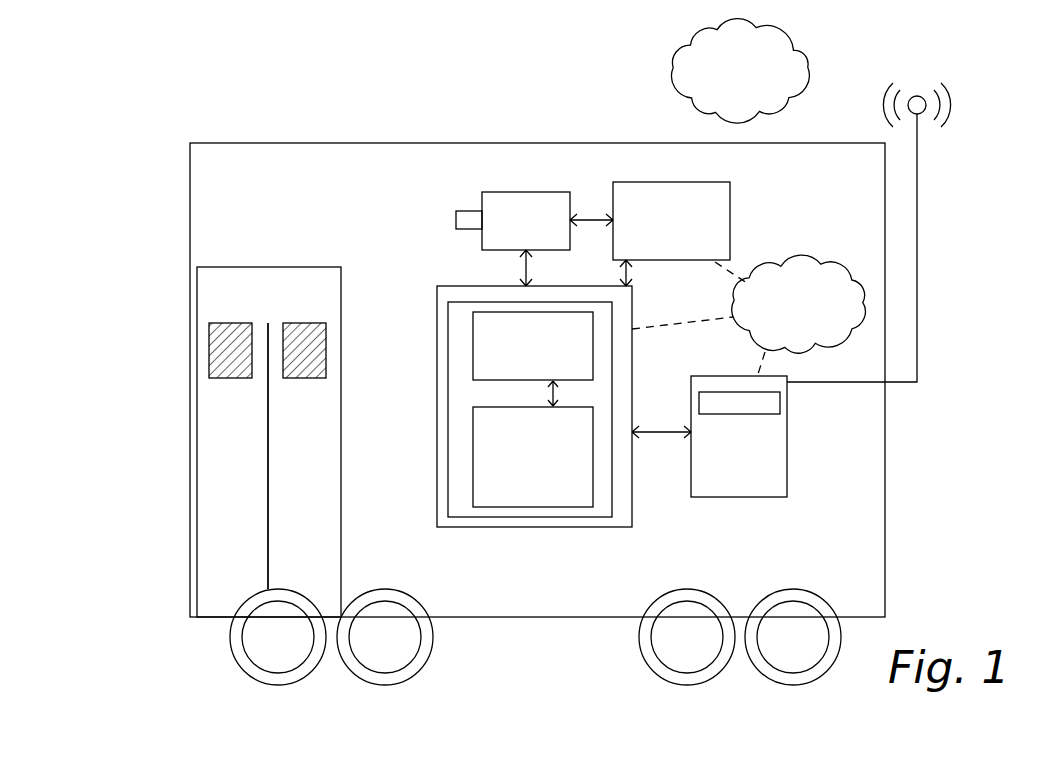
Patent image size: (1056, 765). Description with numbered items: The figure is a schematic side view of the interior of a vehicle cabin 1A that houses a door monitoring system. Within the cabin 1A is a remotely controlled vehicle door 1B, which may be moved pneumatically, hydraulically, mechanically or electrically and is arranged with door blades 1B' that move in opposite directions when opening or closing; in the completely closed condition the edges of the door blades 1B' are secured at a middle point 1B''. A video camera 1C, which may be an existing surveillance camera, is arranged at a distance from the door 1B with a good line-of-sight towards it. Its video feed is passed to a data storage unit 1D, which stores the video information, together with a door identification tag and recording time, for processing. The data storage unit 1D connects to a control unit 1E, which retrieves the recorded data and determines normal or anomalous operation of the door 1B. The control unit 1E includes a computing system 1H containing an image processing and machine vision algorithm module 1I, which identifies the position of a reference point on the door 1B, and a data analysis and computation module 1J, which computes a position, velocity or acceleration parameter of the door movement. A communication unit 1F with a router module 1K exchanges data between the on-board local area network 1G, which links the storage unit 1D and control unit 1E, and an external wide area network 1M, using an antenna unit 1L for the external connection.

The vehicle cabin 1A is at (890, 143).
The remotely controlled vehicle door 1B is at (269, 407).
The door blade 1B' is at (228, 322).
The middle point 1B'' is at (199, 456).
The video camera 1C is at (482, 196).
The data storage unit 1D is at (730, 204).
The control unit 1E is at (523, 528).
The communication unit 1F is at (757, 497).
The local area network 1G is at (807, 262).
The computing system 1H is at (448, 408).
The image processing and/or machine vision algorithm module 1I is at (473, 335).
The data analysis and computation module 1J is at (473, 441).
The router module 1K is at (785, 407).
The antenna unit 1L is at (918, 295).
The wide area network 1M is at (798, 52).